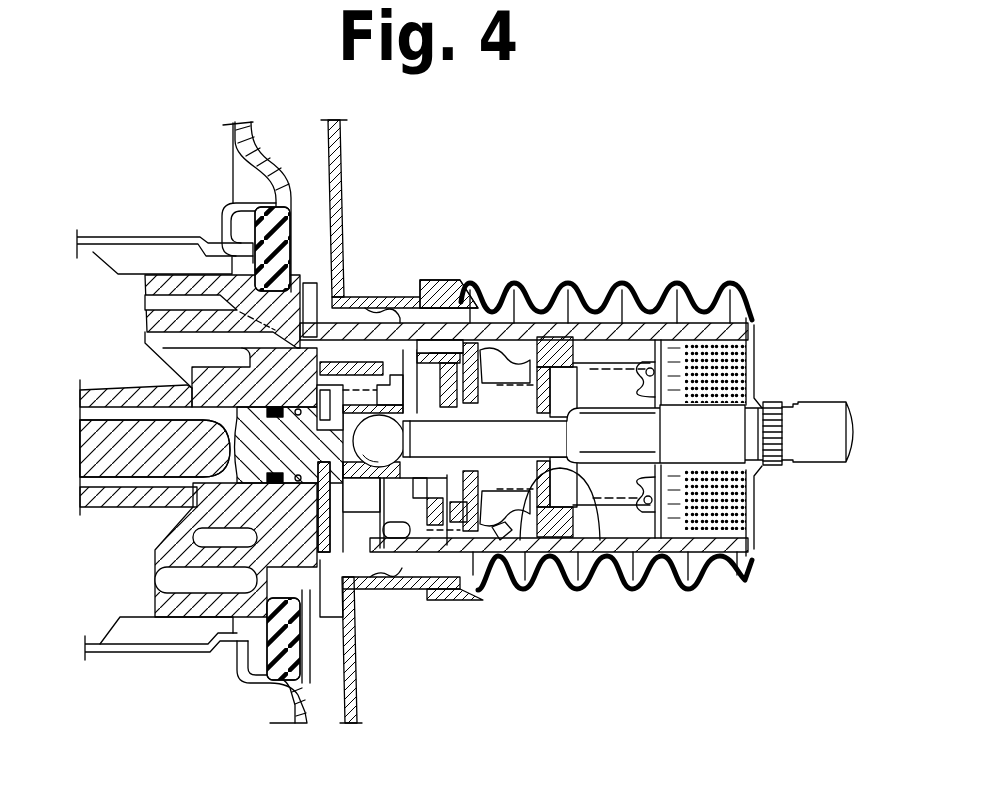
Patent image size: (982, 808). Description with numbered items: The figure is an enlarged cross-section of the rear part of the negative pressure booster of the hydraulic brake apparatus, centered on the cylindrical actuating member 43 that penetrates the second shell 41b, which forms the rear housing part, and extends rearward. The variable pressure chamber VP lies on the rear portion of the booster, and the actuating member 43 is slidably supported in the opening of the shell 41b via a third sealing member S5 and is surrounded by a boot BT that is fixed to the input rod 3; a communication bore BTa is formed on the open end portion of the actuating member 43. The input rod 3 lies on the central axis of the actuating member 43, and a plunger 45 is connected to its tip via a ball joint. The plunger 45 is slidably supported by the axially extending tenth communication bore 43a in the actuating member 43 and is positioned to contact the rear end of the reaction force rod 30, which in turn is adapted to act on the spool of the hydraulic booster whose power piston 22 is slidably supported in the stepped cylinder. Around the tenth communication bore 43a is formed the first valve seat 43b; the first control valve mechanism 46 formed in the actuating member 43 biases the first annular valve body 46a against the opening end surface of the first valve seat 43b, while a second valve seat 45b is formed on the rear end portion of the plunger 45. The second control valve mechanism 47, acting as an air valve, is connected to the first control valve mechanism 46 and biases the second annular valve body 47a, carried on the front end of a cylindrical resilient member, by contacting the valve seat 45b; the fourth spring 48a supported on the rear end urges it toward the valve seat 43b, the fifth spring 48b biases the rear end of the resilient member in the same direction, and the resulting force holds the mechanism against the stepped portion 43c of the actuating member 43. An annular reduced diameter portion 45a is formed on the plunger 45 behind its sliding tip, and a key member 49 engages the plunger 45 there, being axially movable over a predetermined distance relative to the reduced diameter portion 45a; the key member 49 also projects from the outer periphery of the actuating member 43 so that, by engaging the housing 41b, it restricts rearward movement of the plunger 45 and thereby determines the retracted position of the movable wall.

The input rod 3 is at (773, 400).
The power piston 22 is at (113, 400).
The reaction force rod 30 is at (127, 457).
The second shell 41b is at (357, 695).
The actuating member 43 is at (265, 585).
The tenth communication bore 43a is at (345, 300).
The first valve seat 43b is at (383, 345).
The stepped portion 43c is at (580, 310).
The plunger 45 is at (253, 463).
The reduced diameter portion 45a is at (337, 462).
The valve seat 45b is at (512, 530).
The first control valve mechanism 46 is at (470, 490).
The first annular valve body 46a is at (418, 350).
The second control valve mechanism 47 is at (540, 540).
The second annular valve body 47a is at (487, 350).
The fourth spring 48a is at (578, 565).
The fifth spring 48b is at (632, 503).
The key member 49 is at (340, 593).
The variable pressure chamber VP is at (310, 162).
The third sealing member S5 is at (407, 588).
The boot BT is at (717, 297).
The communication bore BTa is at (760, 502).